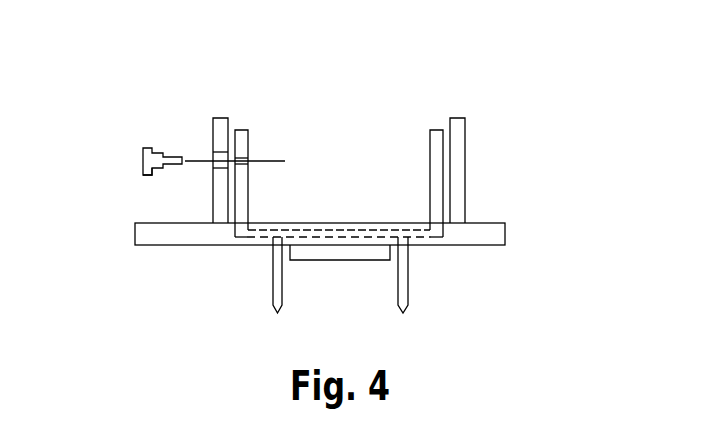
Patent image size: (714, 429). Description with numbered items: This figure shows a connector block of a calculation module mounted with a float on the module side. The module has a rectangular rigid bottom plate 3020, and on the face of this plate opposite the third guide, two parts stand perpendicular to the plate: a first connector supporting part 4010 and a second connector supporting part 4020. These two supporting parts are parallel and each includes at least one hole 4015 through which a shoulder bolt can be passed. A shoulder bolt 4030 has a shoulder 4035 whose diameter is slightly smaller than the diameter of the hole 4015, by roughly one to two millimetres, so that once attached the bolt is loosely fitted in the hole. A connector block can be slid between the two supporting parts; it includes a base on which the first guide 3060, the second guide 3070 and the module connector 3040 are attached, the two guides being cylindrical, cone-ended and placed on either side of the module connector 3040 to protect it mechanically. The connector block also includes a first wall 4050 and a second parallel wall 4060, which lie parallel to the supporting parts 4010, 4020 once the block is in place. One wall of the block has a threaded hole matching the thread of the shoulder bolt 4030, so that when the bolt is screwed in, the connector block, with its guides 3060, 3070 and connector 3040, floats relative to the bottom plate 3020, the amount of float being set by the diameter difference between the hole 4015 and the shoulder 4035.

The bottom plate 3020 is at (503, 235).
The module connector 3040 is at (335, 258).
The first guide 3060 is at (273, 288).
The second guide 3070 is at (408, 286).
The first connector supporting part 4010 is at (222, 122).
The hole 4015 is at (215, 160).
The second connector supporting part 4020 is at (458, 120).
The shoulder bolt 4030 is at (142, 159).
The shoulder 4035 is at (153, 172).
The first wall 4050 is at (242, 133).
The second parallel wall 4060 is at (436, 132).